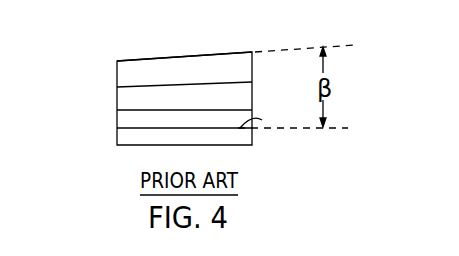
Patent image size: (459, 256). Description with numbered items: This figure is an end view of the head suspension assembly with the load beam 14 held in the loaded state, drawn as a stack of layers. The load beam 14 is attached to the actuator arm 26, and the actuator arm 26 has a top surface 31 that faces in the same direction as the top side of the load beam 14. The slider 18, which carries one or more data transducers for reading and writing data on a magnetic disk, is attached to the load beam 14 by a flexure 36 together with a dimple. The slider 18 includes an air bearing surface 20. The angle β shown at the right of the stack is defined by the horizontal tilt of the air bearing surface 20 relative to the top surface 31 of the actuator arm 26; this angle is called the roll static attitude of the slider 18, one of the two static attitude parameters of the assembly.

The air bearing surface 20 is at (157, 58).
The slider 18 is at (115, 68).
The flexure 36 is at (122, 95).
The load beam 14 is at (122, 120).
The actuator arm 26 is at (117, 140).
The top surface 31 is at (262, 120).